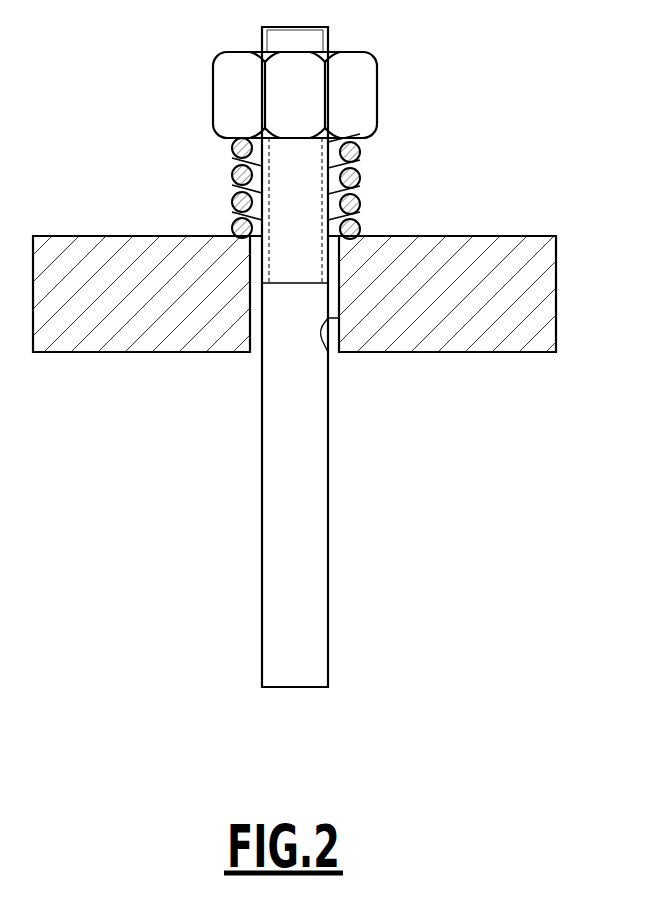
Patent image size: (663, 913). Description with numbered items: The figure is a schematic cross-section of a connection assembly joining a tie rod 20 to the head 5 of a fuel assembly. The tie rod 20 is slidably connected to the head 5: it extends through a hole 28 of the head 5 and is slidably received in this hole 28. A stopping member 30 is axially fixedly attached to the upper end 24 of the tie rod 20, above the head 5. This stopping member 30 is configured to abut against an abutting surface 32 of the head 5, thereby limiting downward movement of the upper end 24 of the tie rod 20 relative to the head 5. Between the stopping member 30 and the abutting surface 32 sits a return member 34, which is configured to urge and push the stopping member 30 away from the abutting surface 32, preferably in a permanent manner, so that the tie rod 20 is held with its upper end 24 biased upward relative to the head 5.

The head 5 is at (465, 216).
The tie rod 20 is at (278, 501).
The upper end 24 is at (312, 172).
The hole 28 is at (329, 352).
The stopping member 30 is at (237, 100).
The abutting surface 32 is at (69, 236).
The return member 34 is at (240, 175).